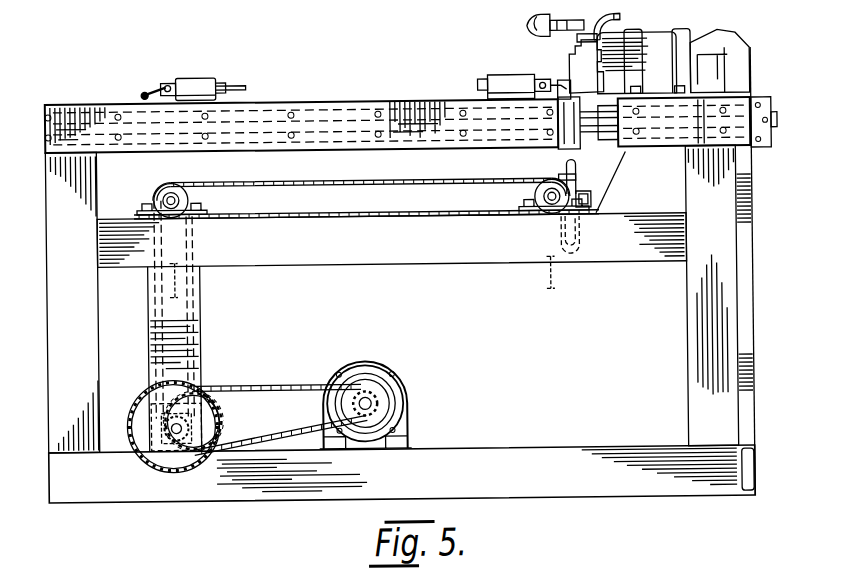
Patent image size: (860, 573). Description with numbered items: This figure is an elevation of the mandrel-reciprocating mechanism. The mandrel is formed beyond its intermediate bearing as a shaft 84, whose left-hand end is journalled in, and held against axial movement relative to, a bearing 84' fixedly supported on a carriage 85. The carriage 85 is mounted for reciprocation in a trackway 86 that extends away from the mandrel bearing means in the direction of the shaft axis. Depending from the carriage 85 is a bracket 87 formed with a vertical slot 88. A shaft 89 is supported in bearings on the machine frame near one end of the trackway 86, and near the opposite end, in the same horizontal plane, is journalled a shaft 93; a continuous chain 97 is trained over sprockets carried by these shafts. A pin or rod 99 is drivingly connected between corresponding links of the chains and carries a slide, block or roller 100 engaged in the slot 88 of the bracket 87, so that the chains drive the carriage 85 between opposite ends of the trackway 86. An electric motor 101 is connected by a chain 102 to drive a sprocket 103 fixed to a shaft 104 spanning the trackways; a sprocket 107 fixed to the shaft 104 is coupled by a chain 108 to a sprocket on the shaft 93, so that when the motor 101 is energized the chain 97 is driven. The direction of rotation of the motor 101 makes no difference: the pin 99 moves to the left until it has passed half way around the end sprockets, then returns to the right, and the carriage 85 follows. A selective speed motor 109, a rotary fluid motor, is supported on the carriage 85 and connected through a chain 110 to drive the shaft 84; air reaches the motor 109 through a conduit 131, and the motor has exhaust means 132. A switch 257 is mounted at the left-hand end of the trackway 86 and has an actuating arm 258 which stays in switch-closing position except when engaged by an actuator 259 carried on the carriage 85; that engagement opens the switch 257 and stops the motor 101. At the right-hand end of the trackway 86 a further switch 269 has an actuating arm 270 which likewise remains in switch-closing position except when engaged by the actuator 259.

The shaft 84 is at (767, 104).
The bearing 84' is at (674, 134).
The carriage 85 is at (560, 156).
The trackway 86 is at (390, 125).
The bracket 87 is at (592, 217).
The vertical slot 88 is at (577, 180).
The shaft 89 is at (547, 201).
The shaft 93 is at (153, 192).
The continuous chain 97 is at (428, 185).
The pin or rod 99 is at (565, 200).
The slide, block or roller 100 is at (583, 197).
The electric motor 101 is at (393, 389).
The chain 102 is at (262, 389).
The sprocket 103 is at (217, 425).
The shaft 104 is at (145, 404).
The sprocket 107 is at (177, 436).
The chain 108 is at (193, 333).
The selective speed motor 109 is at (678, 38).
The chain 110 is at (698, 70).
The conduit 131 is at (620, 17).
The exhaust means 132 is at (574, 27).
The switch 257 is at (201, 80).
The actuating arm 258 is at (147, 93).
The actuator 259 is at (570, 100).
The switch 269 is at (496, 81).
The actuating arm 270 is at (567, 95).